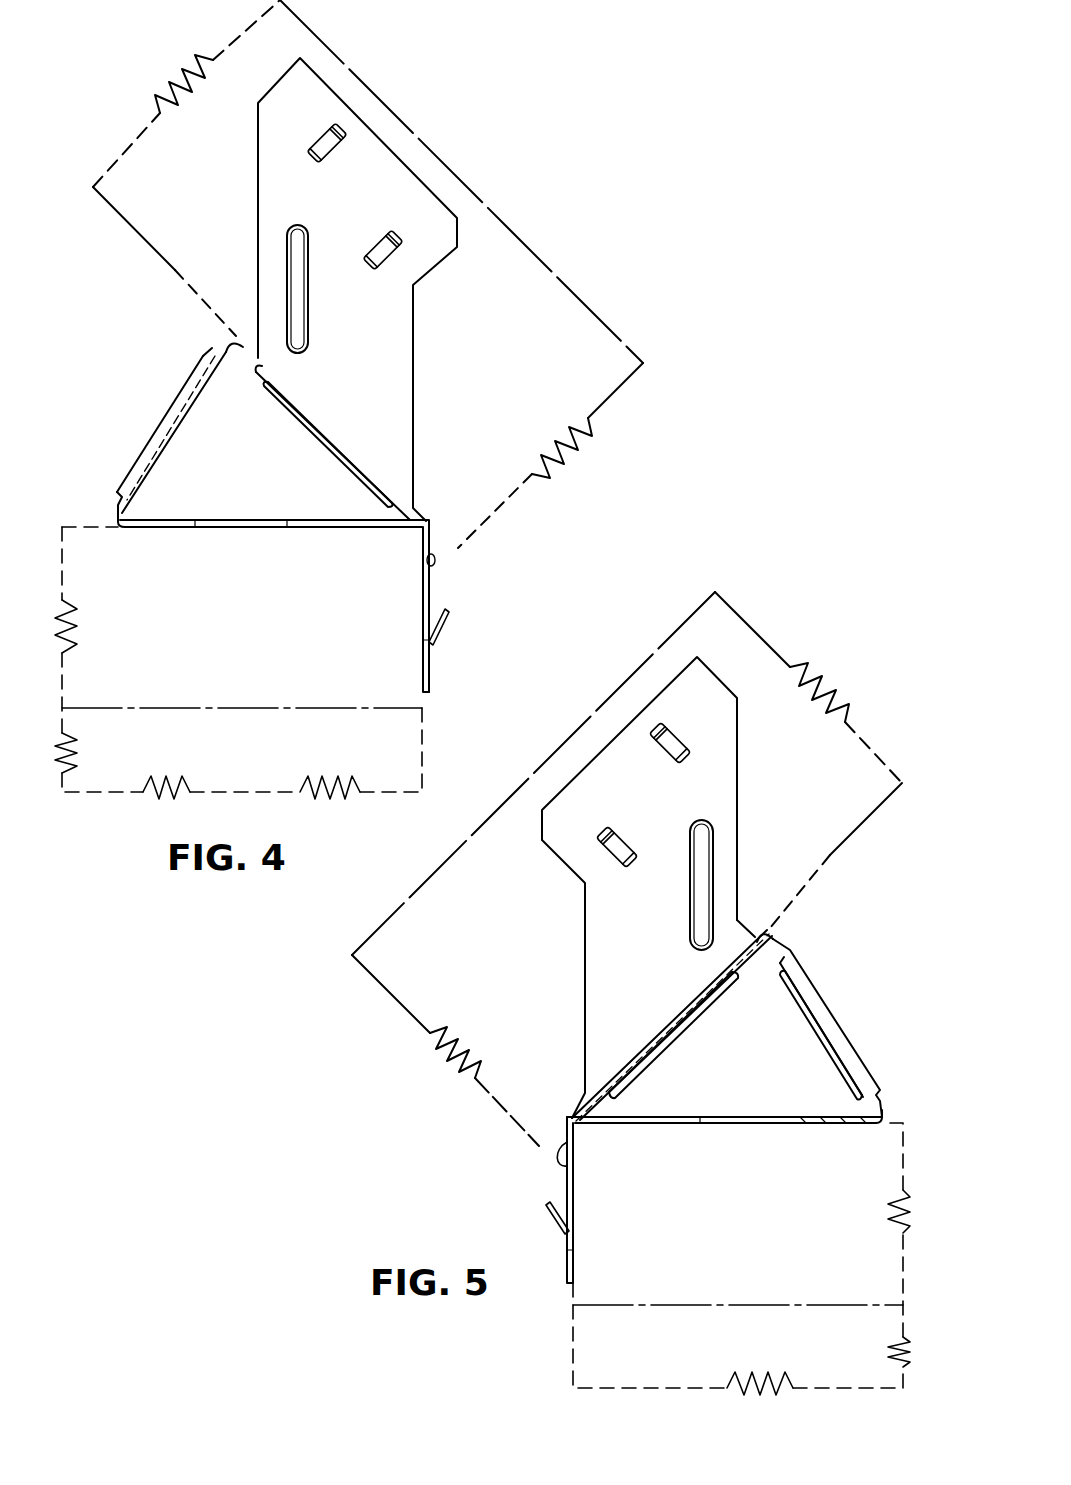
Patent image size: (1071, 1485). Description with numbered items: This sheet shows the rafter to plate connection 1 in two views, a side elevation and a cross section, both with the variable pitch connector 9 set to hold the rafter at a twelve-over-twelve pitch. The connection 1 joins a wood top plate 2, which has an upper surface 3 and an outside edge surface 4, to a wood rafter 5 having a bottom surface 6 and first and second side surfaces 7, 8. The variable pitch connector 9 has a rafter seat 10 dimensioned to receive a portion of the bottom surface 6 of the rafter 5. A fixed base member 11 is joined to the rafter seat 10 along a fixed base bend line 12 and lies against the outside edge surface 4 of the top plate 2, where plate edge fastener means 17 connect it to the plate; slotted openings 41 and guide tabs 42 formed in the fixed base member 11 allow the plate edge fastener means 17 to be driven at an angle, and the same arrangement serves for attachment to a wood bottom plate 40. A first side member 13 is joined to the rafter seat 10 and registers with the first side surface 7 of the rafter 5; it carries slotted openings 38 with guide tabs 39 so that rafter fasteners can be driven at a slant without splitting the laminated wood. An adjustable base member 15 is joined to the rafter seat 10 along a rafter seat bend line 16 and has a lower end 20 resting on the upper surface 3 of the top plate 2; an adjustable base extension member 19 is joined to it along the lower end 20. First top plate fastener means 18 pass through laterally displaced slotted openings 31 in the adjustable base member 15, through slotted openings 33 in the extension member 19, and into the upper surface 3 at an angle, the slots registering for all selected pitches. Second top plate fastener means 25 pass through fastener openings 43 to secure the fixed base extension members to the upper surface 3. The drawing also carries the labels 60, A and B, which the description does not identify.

In FIG. 4, the rafter to plate connection 1 is at (146, 347).
In FIG. 5, the rafter to plate connection 1 is at (449, 1141).
In FIG. 4, the wood top plate 2 is at (56, 543).
In FIG. 5, the wood top plate 2 is at (910, 1166).
In FIG. 4, the upper surface 3 is at (72, 526).
In FIG. 5, the upper surface 3 is at (905, 1091).
In FIG. 4, the outside edge surface 4 is at (425, 701).
In FIG. 5, the outside edge surface 4 is at (570, 1298).
In FIG. 4, the wood rafter 5 is at (120, 225).
In FIG. 5, the wood rafter 5 is at (376, 991).
In FIG. 4, the bottom surface 6 is at (143, 237).
In FIG. 5, the bottom surface 6 is at (872, 815).
In FIG. 4, the first side surface 7 is at (198, 192).
In FIG. 5, the second side surface 8 is at (488, 942).
In FIG. 4, the variable pitch connector 9 is at (180, 381).
In FIG. 5, the variable pitch connector 9 is at (826, 981).
In FIG. 5, the rafter seat 10 is at (672, 1021).
In FIG. 4, the fixed base member 11 is at (432, 669).
In FIG. 5, the fixed base member 11 is at (567, 1264).
In FIG. 4, the fixed base bend line 12 is at (432, 519).
In FIG. 5, the fixed base bend line 12 is at (568, 1118).
In FIG. 4, the first side member 13 is at (375, 385).
In FIG. 5, the first side member 13 is at (653, 925).
In FIG. 4, the adjustable base member 15 is at (172, 401).
In FIG. 5, the adjustable base member 15 is at (833, 1018).
In FIG. 4, the rafter seat bend line 16 is at (228, 339).
In FIG. 5, the rafter seat bend line 16 is at (771, 932).
In FIG. 4, the plate edge fastener means 17 is at (440, 603).
In FIG. 4, the first top plate fastener means 18 is at (140, 453).
In FIG. 4, the adjustable base extension member 19 is at (140, 531).
In FIG. 5, the adjustable base extension member 19 is at (830, 1116).
In FIG. 4, the lower end 20 is at (110, 519).
In FIG. 5, the lower end 20 is at (884, 1114).
In FIG. 4, the second top plate fastener means 25 is at (281, 498).
In FIG. 4, the laterally displaced slotted opening 31 is at (160, 465).
In FIG. 4, the slotted opening 33 is at (153, 455).
In FIG. 4, the slotted openings 38 is at (346, 132).
In FIG. 5, the slotted openings 38 is at (653, 728).
In FIG. 4, the guide tabs 39 is at (329, 160).
In FIG. 5, the guide tabs 39 is at (672, 748).
In FIG. 4, the wood bottom plate 40 is at (62, 791).
In FIG. 5, the wood bottom plate 40 is at (572, 1358).
In FIG. 4, the slotted openings 41 is at (422, 622).
In FIG. 4, the guide tabs 42 is at (450, 629).
In FIG. 5, the guide tabs 42 is at (550, 1214).
In FIG. 4, the fastener openings 43 is at (279, 458).
In FIG. 4, the slot 60 is at (305, 303).
In FIG. 5, the slot 60 is at (705, 866).
In FIG. 4, the dimension A is at (245, 514).
In FIG. 5, the dimension A is at (748, 1112).
In FIG. 4, the dimension B is at (225, 514).
In FIG. 5, the dimension B is at (768, 1112).